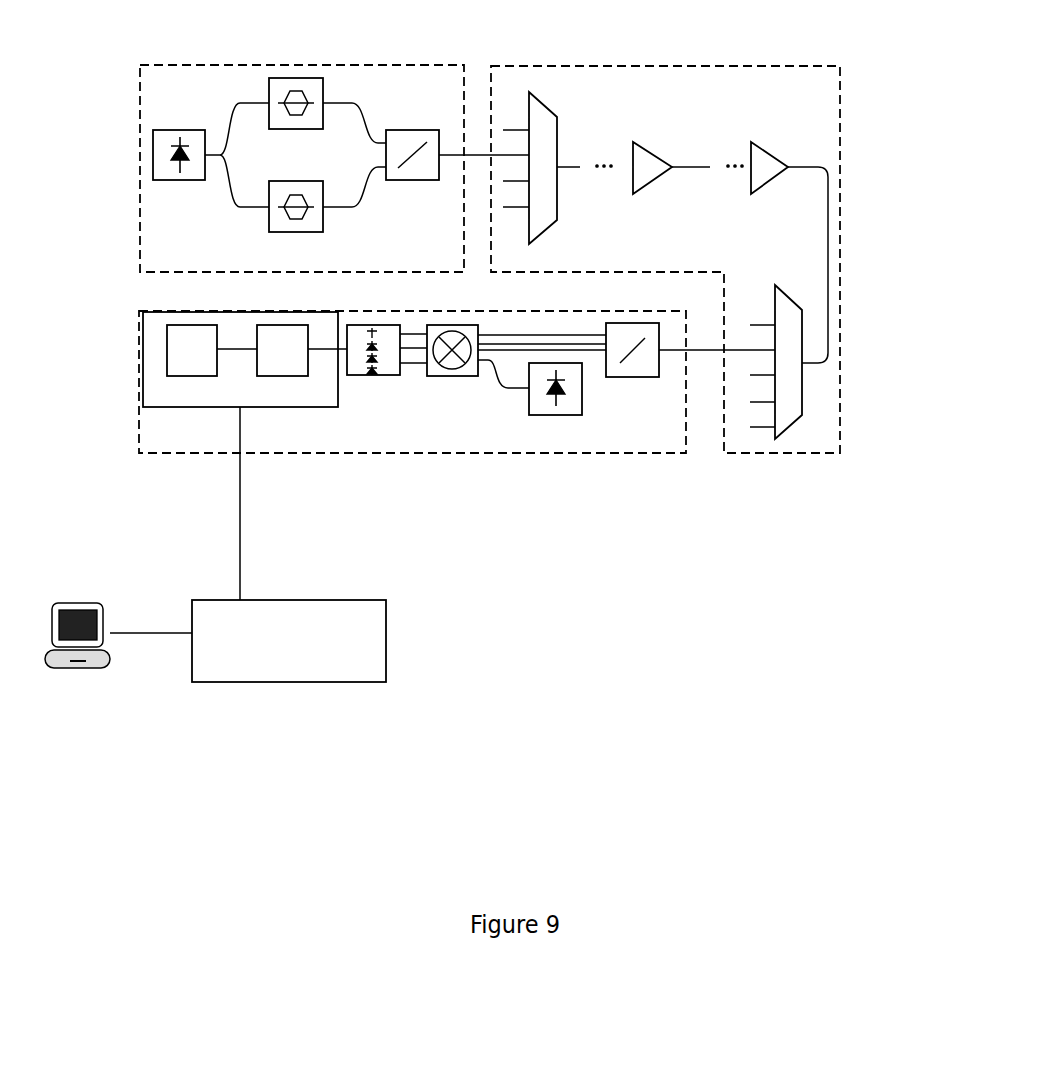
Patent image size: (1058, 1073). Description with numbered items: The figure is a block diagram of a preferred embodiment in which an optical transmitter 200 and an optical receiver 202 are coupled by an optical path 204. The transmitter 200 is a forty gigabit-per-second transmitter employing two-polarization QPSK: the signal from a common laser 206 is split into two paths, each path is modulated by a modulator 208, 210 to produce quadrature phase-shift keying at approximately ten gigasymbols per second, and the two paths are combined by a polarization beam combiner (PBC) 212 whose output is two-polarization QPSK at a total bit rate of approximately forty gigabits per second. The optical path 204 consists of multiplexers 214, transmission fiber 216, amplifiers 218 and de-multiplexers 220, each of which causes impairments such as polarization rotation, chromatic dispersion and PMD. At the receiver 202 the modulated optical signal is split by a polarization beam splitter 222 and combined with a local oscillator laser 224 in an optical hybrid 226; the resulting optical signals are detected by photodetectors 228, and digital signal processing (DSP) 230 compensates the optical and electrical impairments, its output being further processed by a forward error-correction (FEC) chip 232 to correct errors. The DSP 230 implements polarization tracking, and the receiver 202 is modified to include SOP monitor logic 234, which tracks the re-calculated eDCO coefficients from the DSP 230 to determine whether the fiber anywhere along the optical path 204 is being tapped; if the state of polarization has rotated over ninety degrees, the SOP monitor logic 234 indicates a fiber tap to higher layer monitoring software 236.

The optical transmitter 200 is at (240, 52).
The optical receiver 202 is at (614, 455).
The optical path 204 is at (855, 115).
The common laser 206 is at (142, 148).
The modulator 208 is at (323, 78).
The modulator 210 is at (273, 228).
The polarization beam combiner (PBC) 212 is at (437, 130).
The multiplexers 214 is at (547, 115).
The transmission fiber 216 is at (823, 262).
The amplifiers 218 is at (645, 148).
The de-multiplexers 220 is at (788, 422).
The polarization beam splitter 222 is at (662, 373).
The local oscillator laser 224 is at (530, 408).
The optical hybrid 226 is at (435, 375).
The photodetectors 228 is at (353, 375).
The digital signal processing (DSP) 230 is at (257, 355).
The forward error-correction (FEC) chip 232 is at (173, 375).
The SOP monitor logic 234 is at (317, 682).
The higher layer monitoring software 236 is at (72, 667).